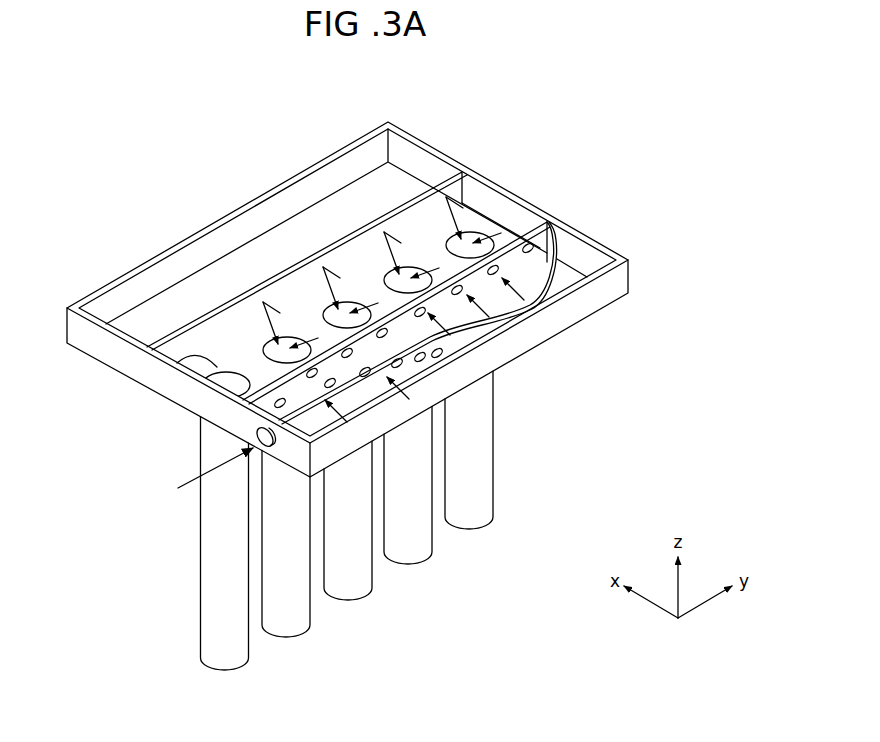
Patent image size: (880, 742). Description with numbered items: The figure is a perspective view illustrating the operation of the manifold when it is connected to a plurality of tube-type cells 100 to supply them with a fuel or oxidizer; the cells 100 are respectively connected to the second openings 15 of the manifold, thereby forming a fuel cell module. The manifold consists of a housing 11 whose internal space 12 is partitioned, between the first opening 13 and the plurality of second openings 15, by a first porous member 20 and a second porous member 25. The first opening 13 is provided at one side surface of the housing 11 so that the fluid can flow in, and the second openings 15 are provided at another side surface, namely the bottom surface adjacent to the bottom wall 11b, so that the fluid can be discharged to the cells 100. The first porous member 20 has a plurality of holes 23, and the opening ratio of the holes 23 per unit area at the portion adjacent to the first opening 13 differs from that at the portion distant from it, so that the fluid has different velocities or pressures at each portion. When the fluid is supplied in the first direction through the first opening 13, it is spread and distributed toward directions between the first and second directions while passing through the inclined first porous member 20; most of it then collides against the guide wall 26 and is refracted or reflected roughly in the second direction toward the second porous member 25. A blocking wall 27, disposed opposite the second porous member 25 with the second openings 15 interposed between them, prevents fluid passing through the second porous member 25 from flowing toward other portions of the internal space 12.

The housing 11 is at (418, 138).
The blocking wall 27 is at (448, 192).
The bottom wall 11b is at (472, 218).
The internal space 12 is at (252, 346).
The second openings 15 is at (227, 358).
The first porous member 20 is at (457, 337).
The holes 23 is at (403, 367).
The guide wall 26 is at (573, 288).
The second porous member 25 is at (552, 232).
The first opening 13 is at (258, 432).
The tube-type cells 100 is at (482, 513).